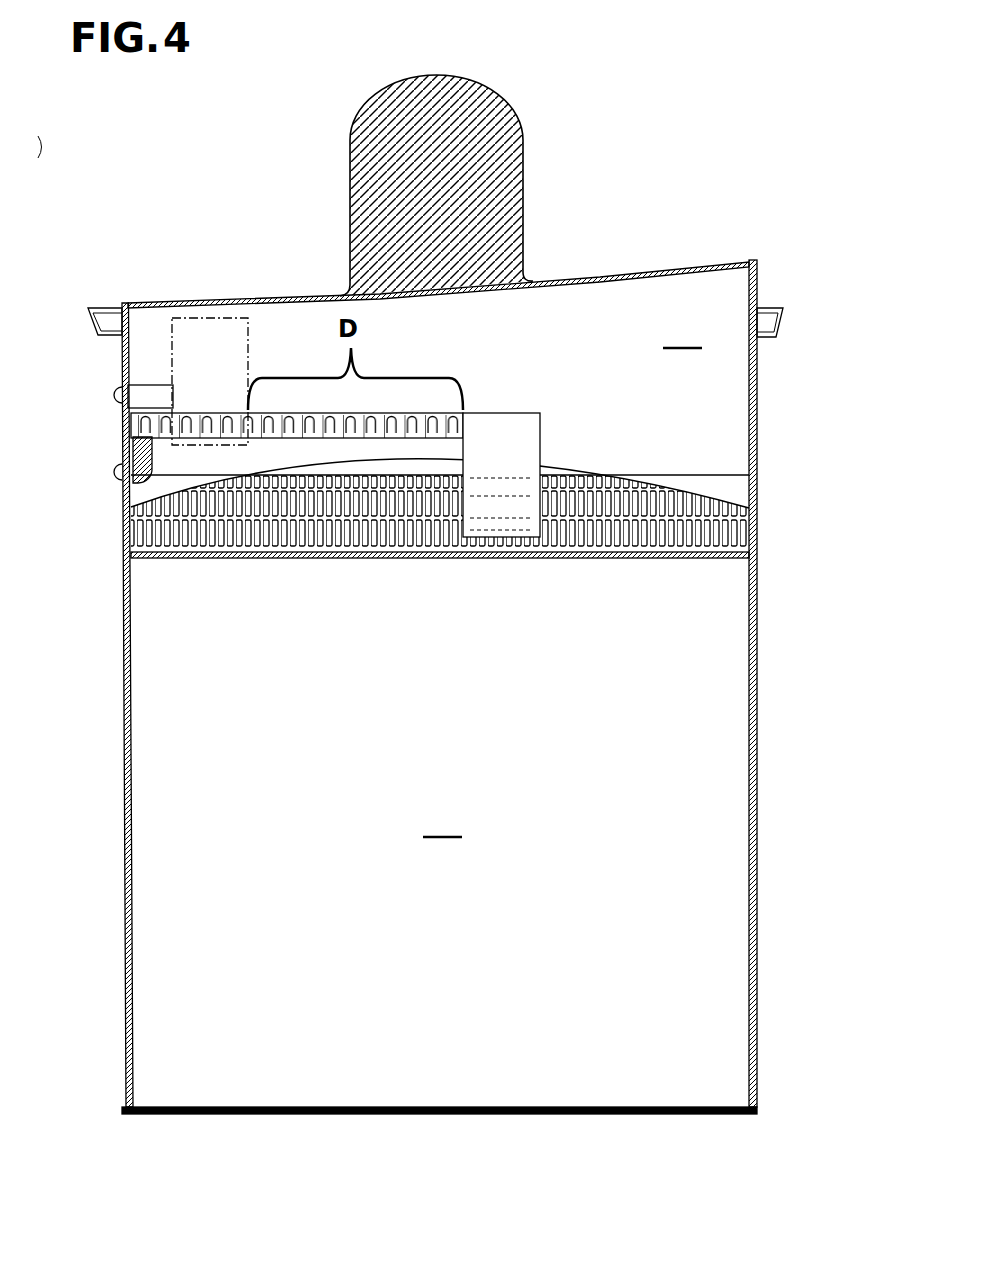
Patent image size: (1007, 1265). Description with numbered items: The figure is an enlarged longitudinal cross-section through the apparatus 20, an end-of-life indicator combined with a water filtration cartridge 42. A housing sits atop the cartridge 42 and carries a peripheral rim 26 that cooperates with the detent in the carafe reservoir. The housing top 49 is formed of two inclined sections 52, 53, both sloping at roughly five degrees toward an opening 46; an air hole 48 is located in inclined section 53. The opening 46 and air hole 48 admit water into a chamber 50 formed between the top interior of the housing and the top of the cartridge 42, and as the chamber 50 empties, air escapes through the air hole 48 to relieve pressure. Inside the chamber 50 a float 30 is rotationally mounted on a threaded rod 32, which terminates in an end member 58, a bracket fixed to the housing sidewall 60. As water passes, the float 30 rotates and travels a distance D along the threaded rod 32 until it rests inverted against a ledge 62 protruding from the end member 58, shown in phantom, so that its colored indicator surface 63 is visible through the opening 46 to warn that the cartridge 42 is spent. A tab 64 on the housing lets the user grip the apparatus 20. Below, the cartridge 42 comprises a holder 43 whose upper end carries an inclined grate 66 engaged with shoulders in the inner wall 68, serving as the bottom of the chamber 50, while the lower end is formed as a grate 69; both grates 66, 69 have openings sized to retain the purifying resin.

The apparatus 20 is at (330, 272).
The peripheral rim 26 is at (782, 315).
The float 30 is at (253, 327).
The threaded rod 32 is at (298, 440).
The cartridge 42 is at (443, 822).
The holder 43 is at (438, 737).
The opening 46 is at (187, 310).
The air hole 48 is at (727, 263).
The housing top 49 is at (562, 277).
The chamber 50 is at (483, 231).
The inclined section 52 is at (148, 303).
The inclined section 53 is at (645, 272).
The end member 58 is at (127, 451).
The sidewall 60 is at (120, 348).
The ledge 62 is at (157, 390).
The indicator surface 63 is at (198, 315).
The tab 64 is at (498, 97).
The inclined grate 66 is at (723, 532).
The inner wall 68 is at (757, 848).
The grate 69 is at (700, 1113).